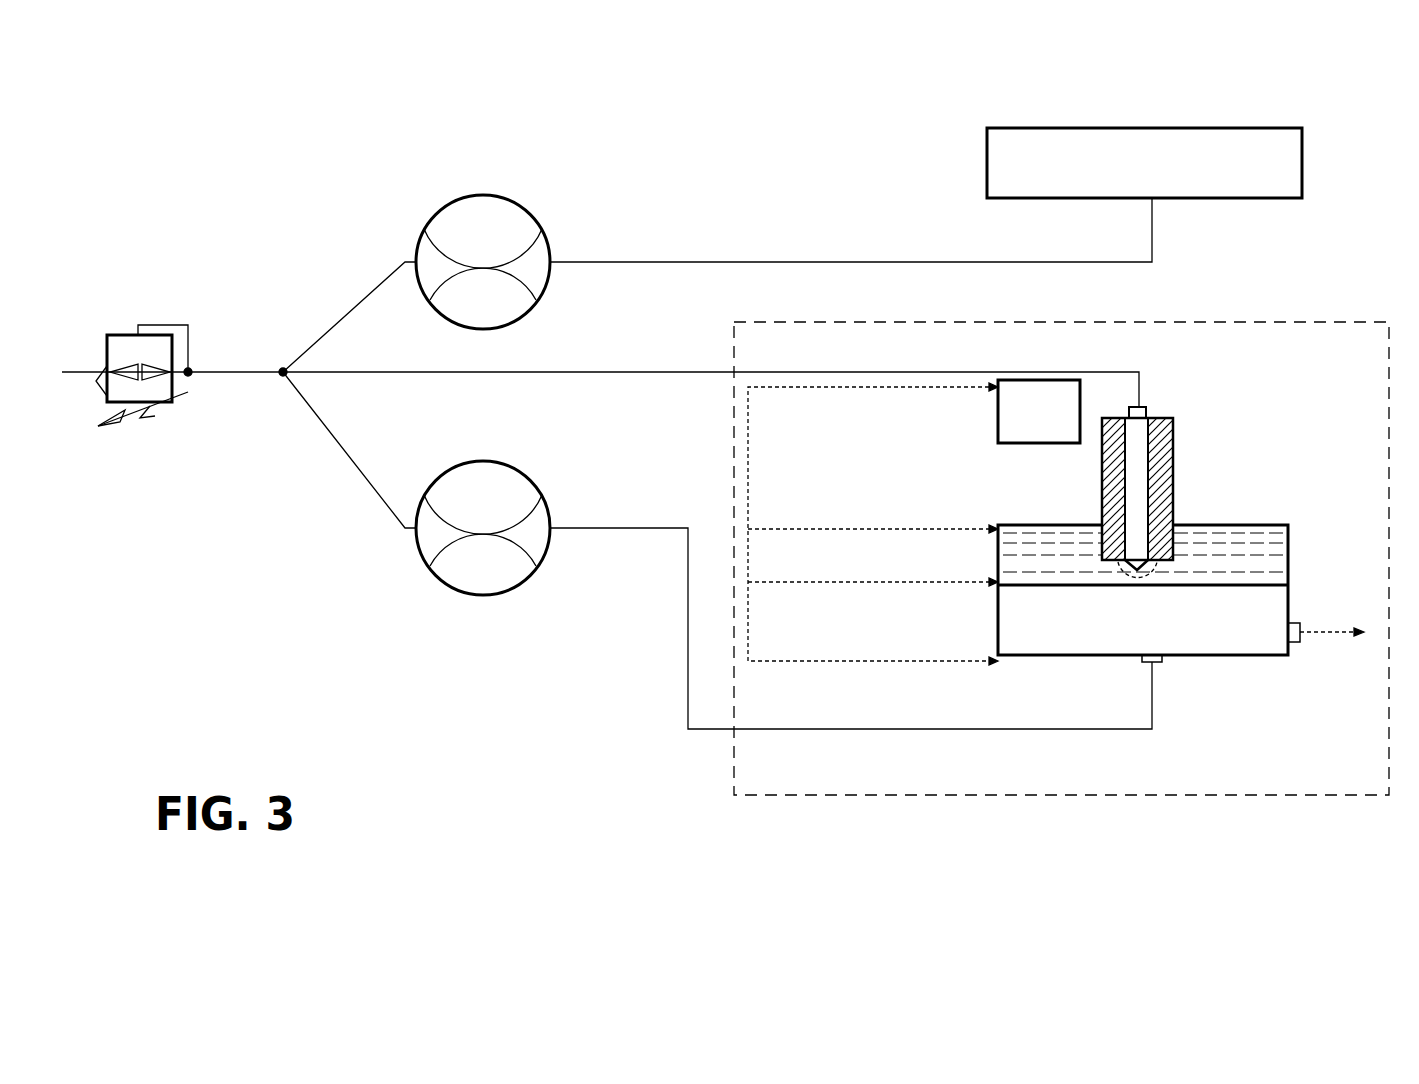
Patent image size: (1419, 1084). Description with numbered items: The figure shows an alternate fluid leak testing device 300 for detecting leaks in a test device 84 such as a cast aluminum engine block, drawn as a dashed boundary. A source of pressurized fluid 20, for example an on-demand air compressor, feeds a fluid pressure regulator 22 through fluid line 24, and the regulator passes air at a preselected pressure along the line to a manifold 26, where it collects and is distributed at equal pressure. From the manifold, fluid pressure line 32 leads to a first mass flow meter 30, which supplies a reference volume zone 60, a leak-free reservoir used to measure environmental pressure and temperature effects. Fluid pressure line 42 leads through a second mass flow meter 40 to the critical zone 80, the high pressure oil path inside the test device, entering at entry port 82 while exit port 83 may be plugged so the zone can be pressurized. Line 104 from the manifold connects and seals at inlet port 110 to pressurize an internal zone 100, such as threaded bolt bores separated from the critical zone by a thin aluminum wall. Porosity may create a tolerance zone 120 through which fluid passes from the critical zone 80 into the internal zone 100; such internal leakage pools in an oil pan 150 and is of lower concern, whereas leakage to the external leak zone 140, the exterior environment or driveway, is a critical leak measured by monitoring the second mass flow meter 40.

The fluid leak testing device 300 is at (677, 59).
The source of pressurized fluid 20 is at (165, 400).
The fluid pressure regulator 22 is at (162, 325).
The fluid line 24 is at (213, 368).
The manifold 26 is at (283, 372).
The first mass flow meter 30 is at (512, 196).
The fluid pressure line 32 is at (365, 296).
The second mass flow meter 40 is at (518, 471).
The fluid pressure line 42 is at (358, 470).
The reference volume zone 60 is at (1240, 128).
The critical zone 80 is at (1278, 610).
The entry port 82 is at (1165, 661).
The exit port 83 is at (1295, 642).
The test device 84 is at (1291, 322).
The internal zone 100 is at (1173, 462).
The line 104 is at (600, 372).
The inlet port 110 is at (1141, 407).
The tolerance zone 120 is at (1153, 578).
The external leak zone 140 is at (933, 642).
The oil pan 150 is at (1020, 419).